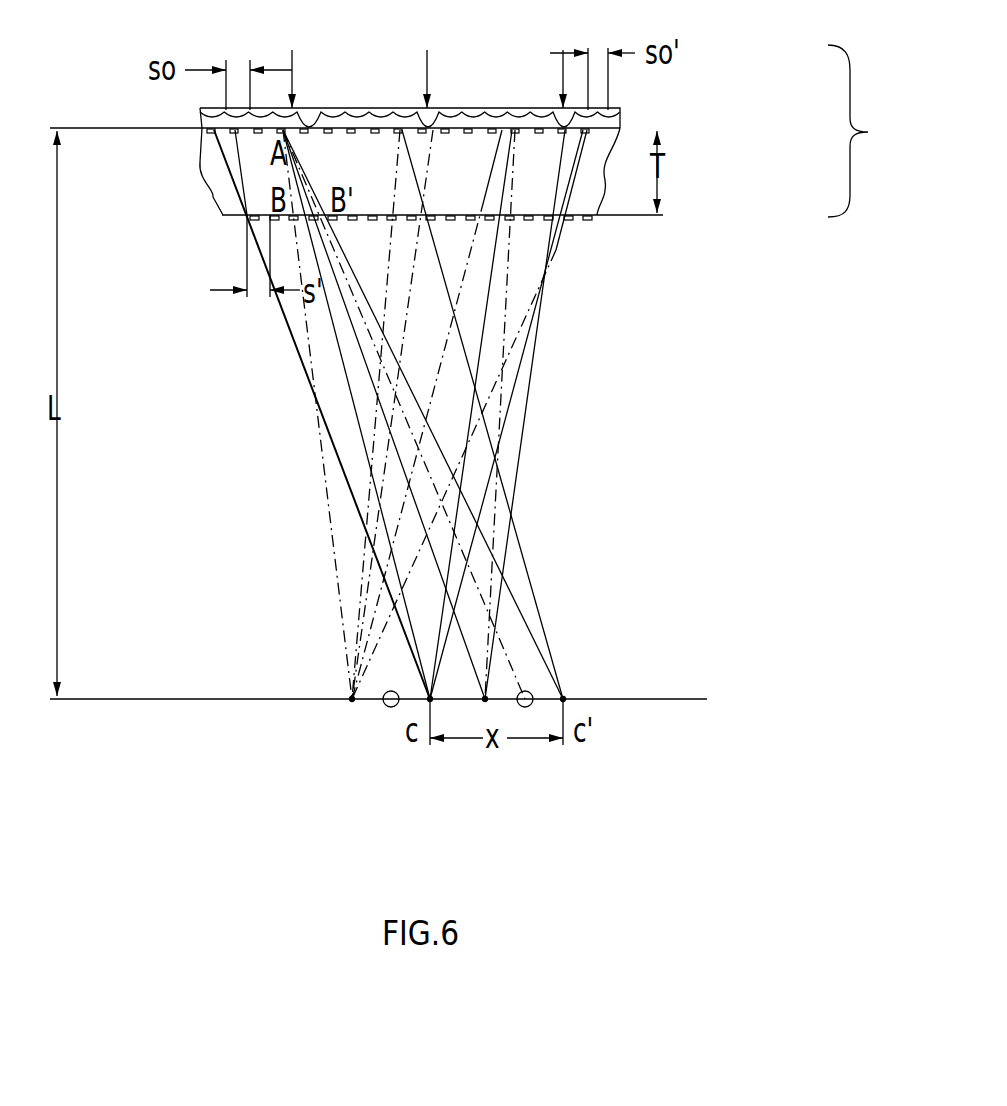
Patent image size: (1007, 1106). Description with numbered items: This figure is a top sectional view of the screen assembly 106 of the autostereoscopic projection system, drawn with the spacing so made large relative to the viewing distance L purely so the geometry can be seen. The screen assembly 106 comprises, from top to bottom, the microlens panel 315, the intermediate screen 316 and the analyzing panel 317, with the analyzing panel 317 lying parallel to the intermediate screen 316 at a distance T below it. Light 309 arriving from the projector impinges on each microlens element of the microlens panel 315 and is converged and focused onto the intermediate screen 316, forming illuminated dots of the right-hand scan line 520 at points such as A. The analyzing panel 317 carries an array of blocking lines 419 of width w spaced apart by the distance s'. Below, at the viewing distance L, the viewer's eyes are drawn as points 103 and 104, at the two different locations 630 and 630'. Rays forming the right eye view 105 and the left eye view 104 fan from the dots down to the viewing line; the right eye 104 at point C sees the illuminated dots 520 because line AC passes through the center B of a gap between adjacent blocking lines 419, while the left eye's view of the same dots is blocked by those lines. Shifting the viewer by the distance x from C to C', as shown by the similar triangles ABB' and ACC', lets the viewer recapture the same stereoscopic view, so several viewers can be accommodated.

The right eye 103 is at (352, 698).
The right eye view 104 is at (303, 333).
The right eye view 105 is at (490, 320).
The screen assembly 106 is at (876, 131).
The light 309 is at (427, 57).
The microlens panel 315 is at (620, 111).
The intermediate screen 316 is at (620, 128).
The analyzing panel 317 is at (560, 214).
The blocking lines 419 is at (563, 217).
The right-hand scan line 520 is at (233, 131).
The viewer location 630 is at (339, 744).
The viewer location 630' is at (600, 654).